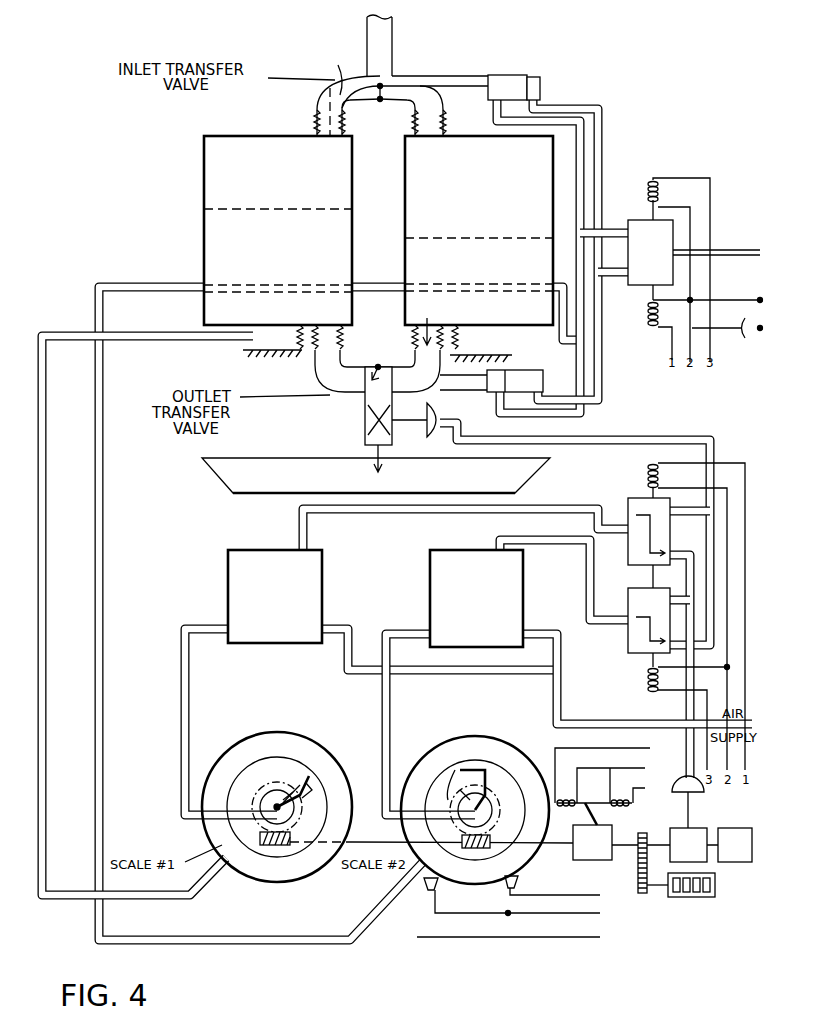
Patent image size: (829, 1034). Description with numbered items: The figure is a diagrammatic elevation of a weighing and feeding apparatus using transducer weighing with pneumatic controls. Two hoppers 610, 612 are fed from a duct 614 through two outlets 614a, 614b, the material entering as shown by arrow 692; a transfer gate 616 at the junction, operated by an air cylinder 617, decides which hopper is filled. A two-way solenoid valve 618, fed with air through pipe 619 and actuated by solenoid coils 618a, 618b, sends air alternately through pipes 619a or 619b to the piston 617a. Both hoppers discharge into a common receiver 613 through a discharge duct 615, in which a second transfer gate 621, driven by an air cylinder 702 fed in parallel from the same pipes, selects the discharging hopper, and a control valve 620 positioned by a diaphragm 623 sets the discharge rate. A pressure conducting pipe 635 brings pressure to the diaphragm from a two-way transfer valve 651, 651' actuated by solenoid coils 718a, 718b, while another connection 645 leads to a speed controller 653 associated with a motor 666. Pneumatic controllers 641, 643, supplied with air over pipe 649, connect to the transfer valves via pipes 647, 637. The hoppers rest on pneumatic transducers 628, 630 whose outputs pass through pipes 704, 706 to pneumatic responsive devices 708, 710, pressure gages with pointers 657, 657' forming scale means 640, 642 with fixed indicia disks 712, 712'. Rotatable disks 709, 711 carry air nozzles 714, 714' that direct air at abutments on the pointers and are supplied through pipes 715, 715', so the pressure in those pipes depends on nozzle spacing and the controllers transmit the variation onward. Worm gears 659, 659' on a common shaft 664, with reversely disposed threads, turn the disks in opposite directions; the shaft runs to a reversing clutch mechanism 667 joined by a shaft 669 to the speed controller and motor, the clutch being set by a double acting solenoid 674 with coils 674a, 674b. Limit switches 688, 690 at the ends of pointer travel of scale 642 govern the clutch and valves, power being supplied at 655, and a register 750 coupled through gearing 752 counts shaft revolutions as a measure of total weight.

The hopper 610 is at (204, 200).
The hopper 612 is at (405, 230).
The common receiver 613 is at (535, 485).
The duct 614 is at (395, 42).
The duct outlet 614a is at (316, 102).
The duct outlet 614b is at (445, 105).
The discharge duct 615 is at (365, 425).
The transfer gate 616 is at (383, 84).
The air cylinder 617 is at (500, 75).
The piston 617a is at (535, 77).
The two-way solenoid valve 618 is at (650, 252).
The solenoid coil 618a is at (655, 325).
The solenoid coil 618b is at (660, 192).
The air supply pipe 619 is at (715, 250).
The air pipe 619a is at (603, 170).
The air pipe 619b is at (583, 147).
The control valve 620 is at (392, 425).
The transfer gate 621 is at (380, 385).
The diaphragm 623 is at (437, 412).
The pneumatic transducer 628 is at (248, 352).
The pneumatic transducer 630 is at (495, 349).
The pressure conducting pipe 635 is at (620, 437).
The pipe 637 is at (553, 544).
The scale means 640 is at (234, 727).
The pneumatic controller 641 is at (322, 578).
The scale means 642 is at (538, 759).
The pneumatic controller 643 is at (430, 590).
The connection 645 is at (685, 705).
The pipe 647 is at (468, 512).
The air pressure pipe 649 is at (552, 692).
The two-way transfer valve 651 is at (628, 615).
The two-way transfer valve 651' is at (640, 543).
The speed controller 653 is at (700, 828).
The power supply terminals 655 is at (752, 354).
The pointer 657 is at (314, 750).
The pointer 657' is at (432, 764).
The worm gear 659 is at (263, 879).
The worm gear 659' is at (467, 879).
The common shaft 664 is at (352, 850).
The motor 666 is at (740, 862).
The reversing clutch mechanism 667 is at (590, 860).
The shaft 669 is at (635, 855).
The double acting solenoid 674 is at (613, 757).
The solenoid coil 674a is at (566, 800).
The solenoid coil 674b is at (620, 800).
The limit switch 688 is at (428, 888).
The limit switch 690 is at (512, 890).
The arrow 692 is at (318, 72).
The air cylinder 702 is at (510, 370).
The pipe 704 is at (35, 482).
The pipe 706 is at (103, 479).
The pneumatic responsive device 708 is at (286, 797).
The rotatable disk 709 is at (262, 795).
The pneumatic responsive device 710 is at (542, 874).
The rotatable disk 711 is at (485, 770).
The fixed outer disk 712 is at (319, 768).
The fixed outer disk 712' is at (431, 832).
The air nozzle 714 is at (337, 772).
The air nozzle 714' is at (428, 745).
The pipe 715 is at (197, 722).
The pipe 715' is at (439, 639).
The solenoid coil 718a is at (648, 478).
The solenoid coil 718b is at (647, 680).
The register 750 is at (693, 897).
The gearing 752 is at (648, 840).